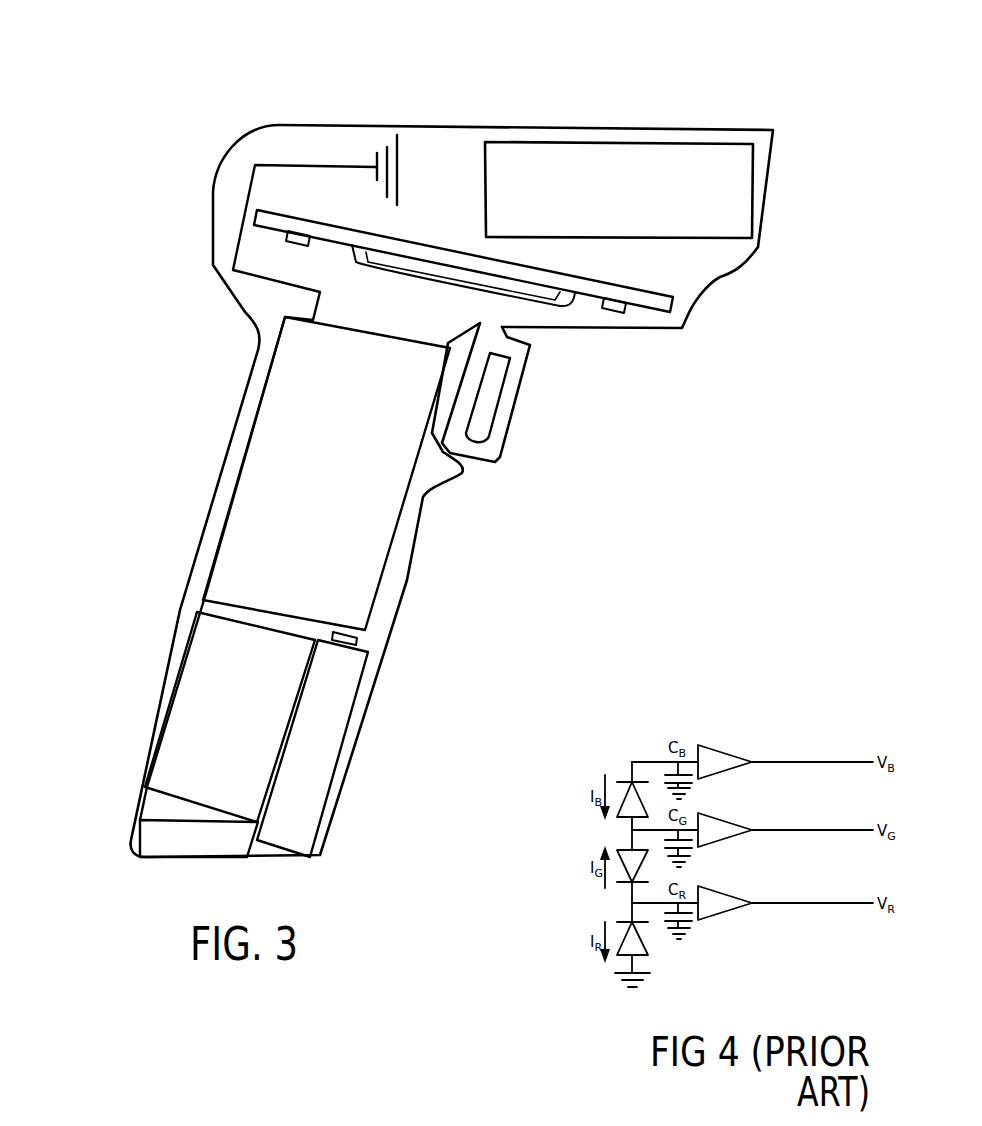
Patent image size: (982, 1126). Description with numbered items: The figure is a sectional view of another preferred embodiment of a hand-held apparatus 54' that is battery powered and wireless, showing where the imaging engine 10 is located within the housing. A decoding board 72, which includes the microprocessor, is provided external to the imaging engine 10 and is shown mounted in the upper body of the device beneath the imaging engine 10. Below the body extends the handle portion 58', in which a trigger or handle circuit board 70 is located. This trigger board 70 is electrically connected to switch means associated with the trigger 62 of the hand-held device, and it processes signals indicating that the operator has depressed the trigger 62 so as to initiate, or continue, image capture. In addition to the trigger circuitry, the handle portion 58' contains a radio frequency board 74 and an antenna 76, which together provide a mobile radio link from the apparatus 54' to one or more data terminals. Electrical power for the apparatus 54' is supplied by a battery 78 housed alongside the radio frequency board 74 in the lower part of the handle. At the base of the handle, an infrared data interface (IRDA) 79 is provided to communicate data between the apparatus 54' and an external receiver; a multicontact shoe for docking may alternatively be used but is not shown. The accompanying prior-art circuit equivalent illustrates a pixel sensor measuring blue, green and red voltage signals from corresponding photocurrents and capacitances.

The hand-held apparatus 54' is at (452, 430).
The imaging engine 10 is at (702, 160).
The antenna 76 is at (333, 167).
The decoding board 72 is at (420, 243).
The trigger 62 is at (505, 417).
The trigger or handle circuit board 70 is at (382, 530).
The handle portion 58' is at (328, 492).
The radio frequency board 74 is at (192, 672).
The battery 78 is at (350, 688).
The infrared data interface (IRDA) 79 is at (143, 838).